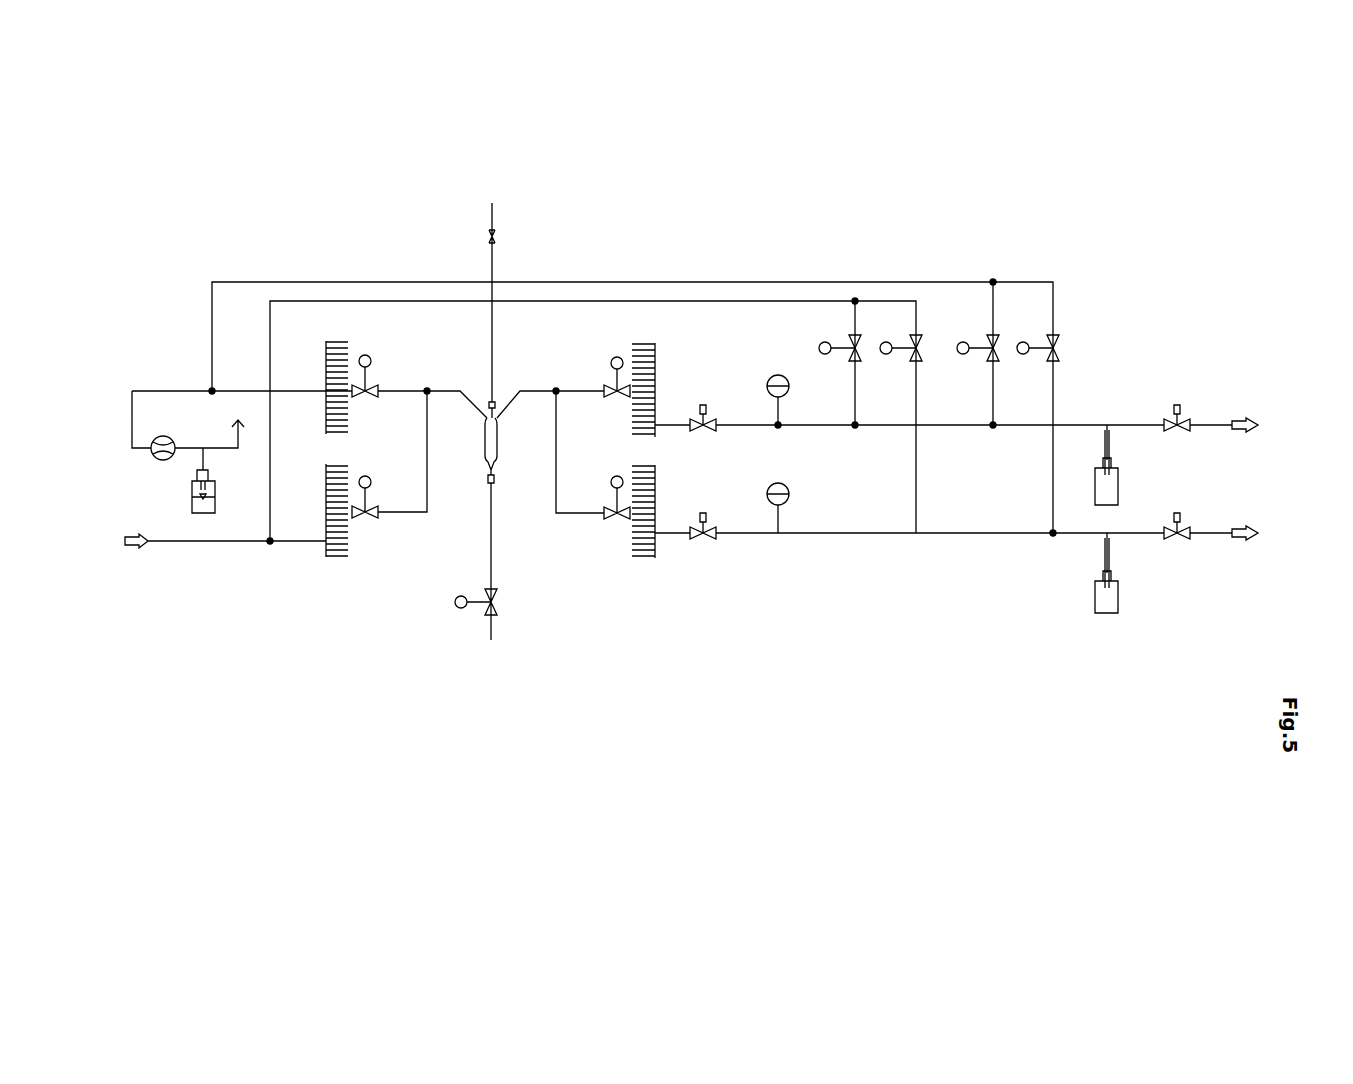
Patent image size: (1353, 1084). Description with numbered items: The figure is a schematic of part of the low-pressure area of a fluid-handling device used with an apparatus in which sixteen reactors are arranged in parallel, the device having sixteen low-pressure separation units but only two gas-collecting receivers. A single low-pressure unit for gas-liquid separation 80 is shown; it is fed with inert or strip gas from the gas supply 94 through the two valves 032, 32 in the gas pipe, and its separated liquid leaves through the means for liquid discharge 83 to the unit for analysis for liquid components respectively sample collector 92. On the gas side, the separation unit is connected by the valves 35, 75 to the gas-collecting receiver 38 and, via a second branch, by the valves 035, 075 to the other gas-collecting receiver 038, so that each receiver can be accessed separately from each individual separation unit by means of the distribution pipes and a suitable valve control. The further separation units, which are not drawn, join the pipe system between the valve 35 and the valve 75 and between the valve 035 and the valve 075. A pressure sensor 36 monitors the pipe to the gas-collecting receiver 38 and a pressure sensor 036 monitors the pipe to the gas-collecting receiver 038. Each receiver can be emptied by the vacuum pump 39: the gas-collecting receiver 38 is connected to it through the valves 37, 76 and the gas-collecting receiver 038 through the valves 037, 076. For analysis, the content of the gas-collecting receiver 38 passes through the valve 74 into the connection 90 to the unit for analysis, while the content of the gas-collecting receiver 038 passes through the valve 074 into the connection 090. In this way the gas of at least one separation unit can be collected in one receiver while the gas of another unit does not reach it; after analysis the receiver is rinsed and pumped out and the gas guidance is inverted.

The gas supply 94 is at (208, 542).
The vacuum pump 39 is at (153, 455).
The valve in pipe to the low-pressure separation unit 032 is at (372, 395).
The valve in pipe to the low-pressure separation unit 32 is at (372, 516).
The unit for gas-liquid-separation (low-pressure side) 80 is at (485, 458).
The means for liquid discharge (low-pressure side) 83 is at (574, 604).
The unit for analysis for liquid components respectively sample collector 92 is at (494, 662).
The valve between low-pressure separation unit and gas-collecting receiver 035 is at (610, 388).
The valve between low-pressure separation unit and gas-collecting receiver 35 is at (610, 510).
The valve 075 is at (710, 430).
The valve 75 is at (710, 538).
The pressure sensor 036 is at (771, 378).
The pressure sensor 36 is at (788, 487).
The valve between gas-collecting receiver and vacuum pump 076 is at (850, 354).
The valve between gas-collecting receiver and vacuum pump 76 is at (911, 354).
The valve between gas-collecting receiver and vacuum pump 037 is at (988, 354).
The valve between gas-collecting receiver and vacuum pump 37 is at (1048, 354).
The valve between gas-collecting receiver and unit for analysis 074 is at (1185, 420).
The valve between gas-collecting receiver and unit for analysis 74 is at (1185, 538).
The connection to unit for analysis 090 is at (1323, 411).
The connection to unit for analysis 90 is at (1309, 519).
The gas-collecting receiver 038 is at (1112, 490).
The gas-collecting receiver 38 is at (1112, 598).